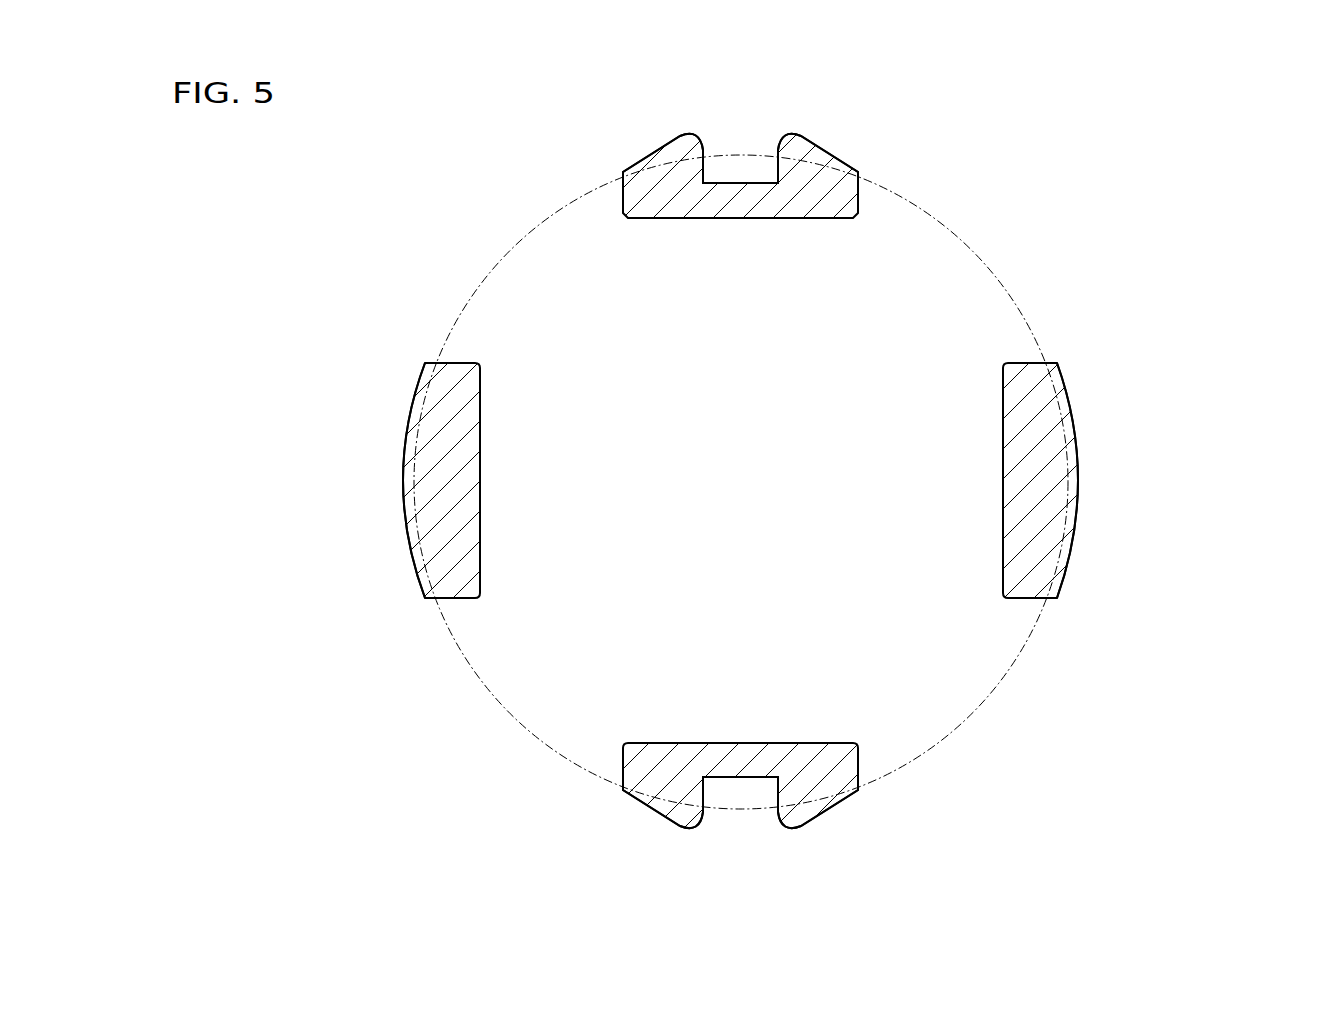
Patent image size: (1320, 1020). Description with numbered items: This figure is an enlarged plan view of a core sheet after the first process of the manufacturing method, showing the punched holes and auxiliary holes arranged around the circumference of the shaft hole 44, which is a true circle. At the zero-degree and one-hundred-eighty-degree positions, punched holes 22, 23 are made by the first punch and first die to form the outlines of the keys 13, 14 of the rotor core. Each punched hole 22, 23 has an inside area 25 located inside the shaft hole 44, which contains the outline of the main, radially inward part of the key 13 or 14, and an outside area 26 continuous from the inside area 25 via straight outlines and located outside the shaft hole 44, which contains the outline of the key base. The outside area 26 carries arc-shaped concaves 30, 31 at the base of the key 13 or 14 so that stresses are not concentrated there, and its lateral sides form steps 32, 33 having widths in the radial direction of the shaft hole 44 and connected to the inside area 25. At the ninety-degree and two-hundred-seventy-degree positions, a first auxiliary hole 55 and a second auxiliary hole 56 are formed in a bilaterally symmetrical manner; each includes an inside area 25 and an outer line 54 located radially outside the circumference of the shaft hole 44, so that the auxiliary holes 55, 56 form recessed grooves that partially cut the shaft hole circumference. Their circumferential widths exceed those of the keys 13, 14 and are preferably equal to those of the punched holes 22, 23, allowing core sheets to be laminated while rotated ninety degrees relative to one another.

The key 13 is at (742, 186).
The key 14 is at (738, 792).
The punched hole 22 is at (1003, 90).
The punched hole 23 is at (998, 730).
The inside area 25 is at (840, 208).
The outside area 26 is at (800, 147).
The arc-shaped concave 30 is at (676, 160).
The arc-shaped concave 31 is at (802, 155).
The step 32 is at (623, 172).
The step 33 is at (858, 172).
The shaft hole 44 is at (1007, 280).
The outer line 54 is at (403, 522).
The first auxiliary hole 55 is at (433, 447).
The second auxiliary hole 56 is at (1057, 463).